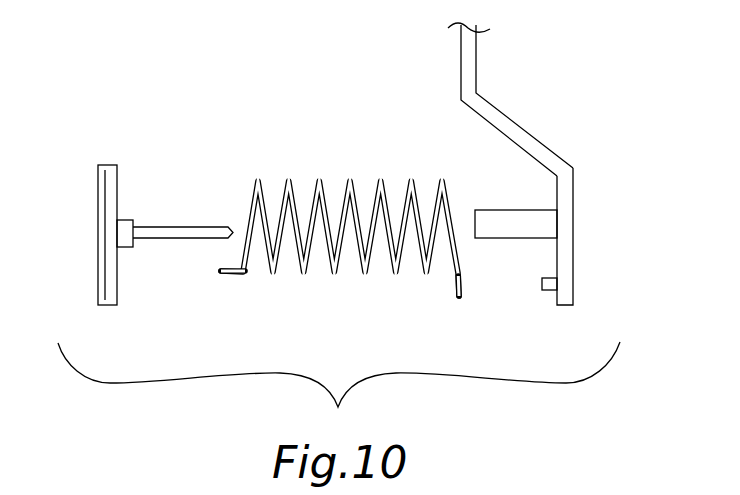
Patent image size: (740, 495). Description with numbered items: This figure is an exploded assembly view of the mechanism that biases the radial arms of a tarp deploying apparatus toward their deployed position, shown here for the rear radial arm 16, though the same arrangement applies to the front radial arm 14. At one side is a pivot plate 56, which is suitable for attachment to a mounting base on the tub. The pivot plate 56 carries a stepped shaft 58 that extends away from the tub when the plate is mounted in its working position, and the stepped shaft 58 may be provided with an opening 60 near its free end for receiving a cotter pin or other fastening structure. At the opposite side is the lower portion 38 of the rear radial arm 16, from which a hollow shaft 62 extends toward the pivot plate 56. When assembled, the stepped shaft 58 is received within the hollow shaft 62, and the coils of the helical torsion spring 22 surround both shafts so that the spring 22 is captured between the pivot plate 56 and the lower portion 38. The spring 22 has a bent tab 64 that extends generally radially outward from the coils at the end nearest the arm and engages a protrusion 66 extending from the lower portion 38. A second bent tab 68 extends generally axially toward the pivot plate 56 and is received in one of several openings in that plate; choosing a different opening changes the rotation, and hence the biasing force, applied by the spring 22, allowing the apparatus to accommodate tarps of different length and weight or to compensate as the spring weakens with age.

The pivot plate 56 is at (105, 165).
The stepped shaft 58 is at (125, 222).
The opening 60 is at (231, 237).
The helical torsion spring 22 is at (351, 178).
The second bent tab 68 is at (222, 278).
The bent tab 64 is at (456, 293).
The rear radial arm 16 is at (511, 99).
The front radial arm 14 is at (471, 50).
The lower portion 38 is at (566, 190).
The hollow shaft 62 is at (522, 209).
The protrusion 66 is at (548, 291).